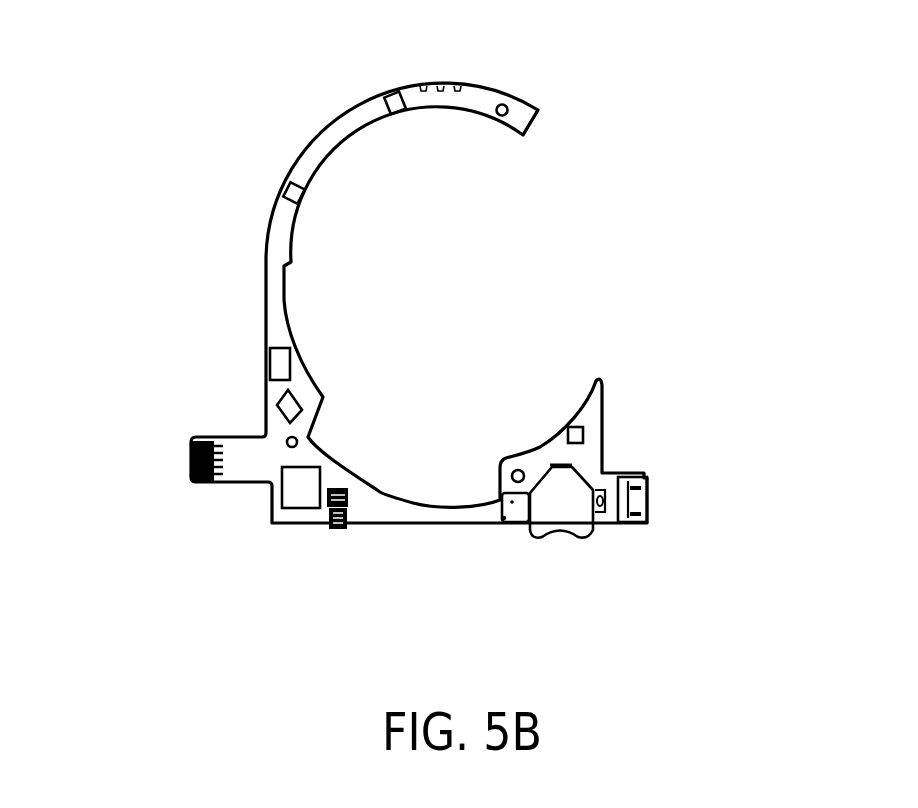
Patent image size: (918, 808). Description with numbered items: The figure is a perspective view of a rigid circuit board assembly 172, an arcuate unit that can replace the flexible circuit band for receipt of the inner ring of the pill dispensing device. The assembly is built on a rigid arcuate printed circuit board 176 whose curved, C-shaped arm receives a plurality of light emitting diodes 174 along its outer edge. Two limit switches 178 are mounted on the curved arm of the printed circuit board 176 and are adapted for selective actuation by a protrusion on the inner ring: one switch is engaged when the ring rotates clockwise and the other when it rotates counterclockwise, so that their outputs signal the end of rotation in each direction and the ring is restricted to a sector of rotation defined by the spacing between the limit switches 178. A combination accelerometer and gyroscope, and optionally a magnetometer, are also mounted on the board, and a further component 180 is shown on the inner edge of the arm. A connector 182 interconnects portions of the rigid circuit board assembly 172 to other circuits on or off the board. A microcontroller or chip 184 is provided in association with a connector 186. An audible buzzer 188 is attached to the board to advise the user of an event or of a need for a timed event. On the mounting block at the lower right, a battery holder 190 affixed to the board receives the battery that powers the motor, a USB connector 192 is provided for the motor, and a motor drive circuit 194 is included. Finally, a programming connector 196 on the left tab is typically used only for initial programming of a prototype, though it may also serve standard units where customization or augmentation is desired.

The rigid circuit board assembly 172 is at (640, 134).
The light emitting diodes 174 is at (440, 78).
The rigid arcuate printed circuit board 176 is at (317, 126).
The limit switches 178 is at (387, 82).
The rectangular component 180 is at (304, 346).
The connector 182 is at (265, 399).
The microcontroller or chip 184 is at (272, 493).
The connector 186 is at (353, 531).
The audible buzzer 188 is at (522, 534).
The battery holder 190 is at (595, 543).
The USB connector 192 is at (658, 487).
The motor drive circuit 194 is at (602, 418).
The programming connector 196 is at (186, 436).